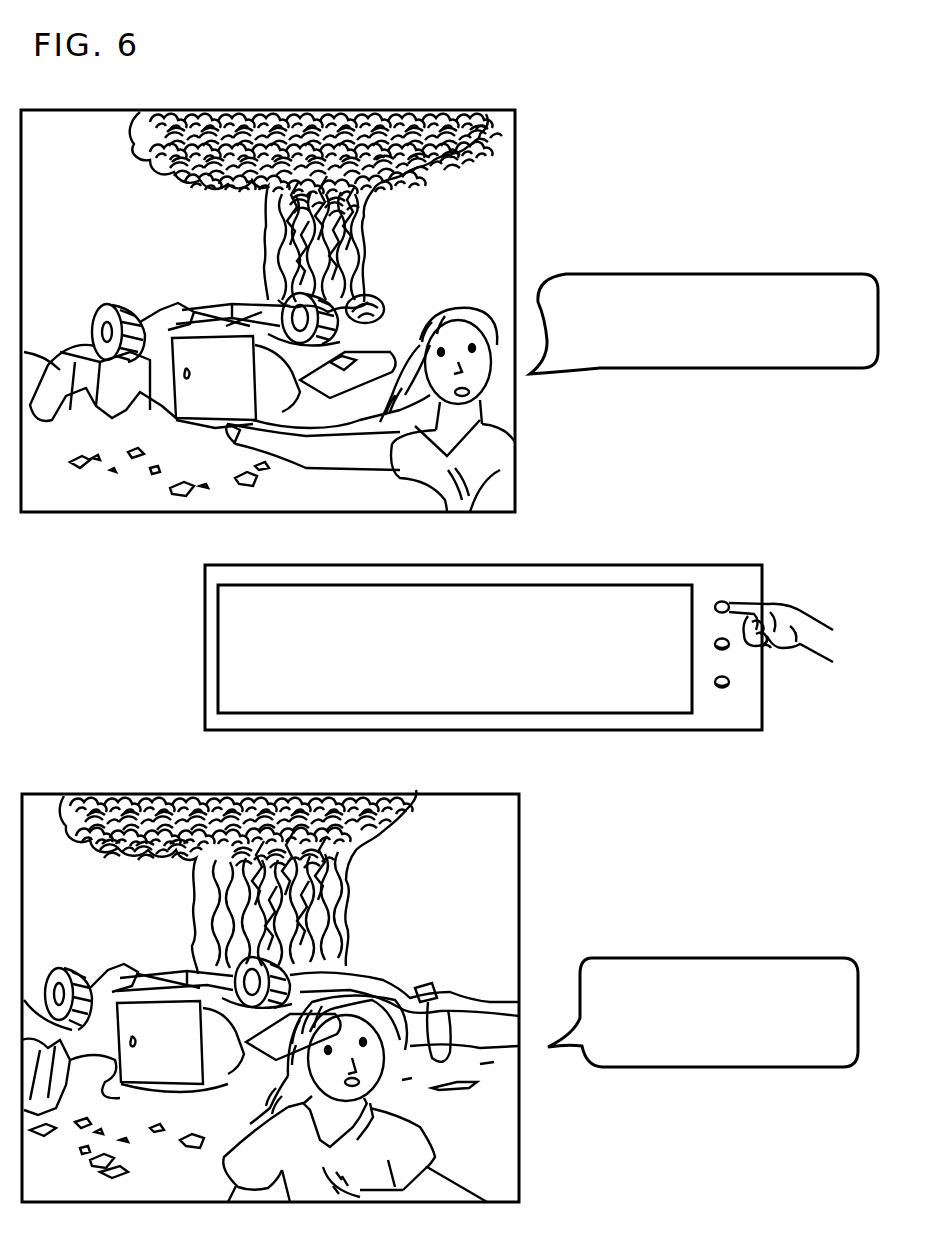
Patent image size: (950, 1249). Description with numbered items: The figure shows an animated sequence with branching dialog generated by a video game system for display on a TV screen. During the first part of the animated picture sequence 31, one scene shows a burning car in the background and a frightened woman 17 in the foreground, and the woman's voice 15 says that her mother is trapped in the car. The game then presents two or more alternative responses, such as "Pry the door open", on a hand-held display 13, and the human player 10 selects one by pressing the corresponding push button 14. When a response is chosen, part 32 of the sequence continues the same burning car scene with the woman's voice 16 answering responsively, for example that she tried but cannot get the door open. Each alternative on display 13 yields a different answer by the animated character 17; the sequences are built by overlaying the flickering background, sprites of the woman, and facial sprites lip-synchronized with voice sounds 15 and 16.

The human player 10 is at (806, 648).
The hand-held display 13 is at (648, 592).
The push button 14 is at (732, 600).
The woman's voice 15 is at (710, 276).
The woman's voice 16 is at (732, 966).
The frightened woman 17 is at (505, 456).
The animated picture sequence part 31 is at (500, 156).
The animated picture sequence part 32 is at (503, 860).